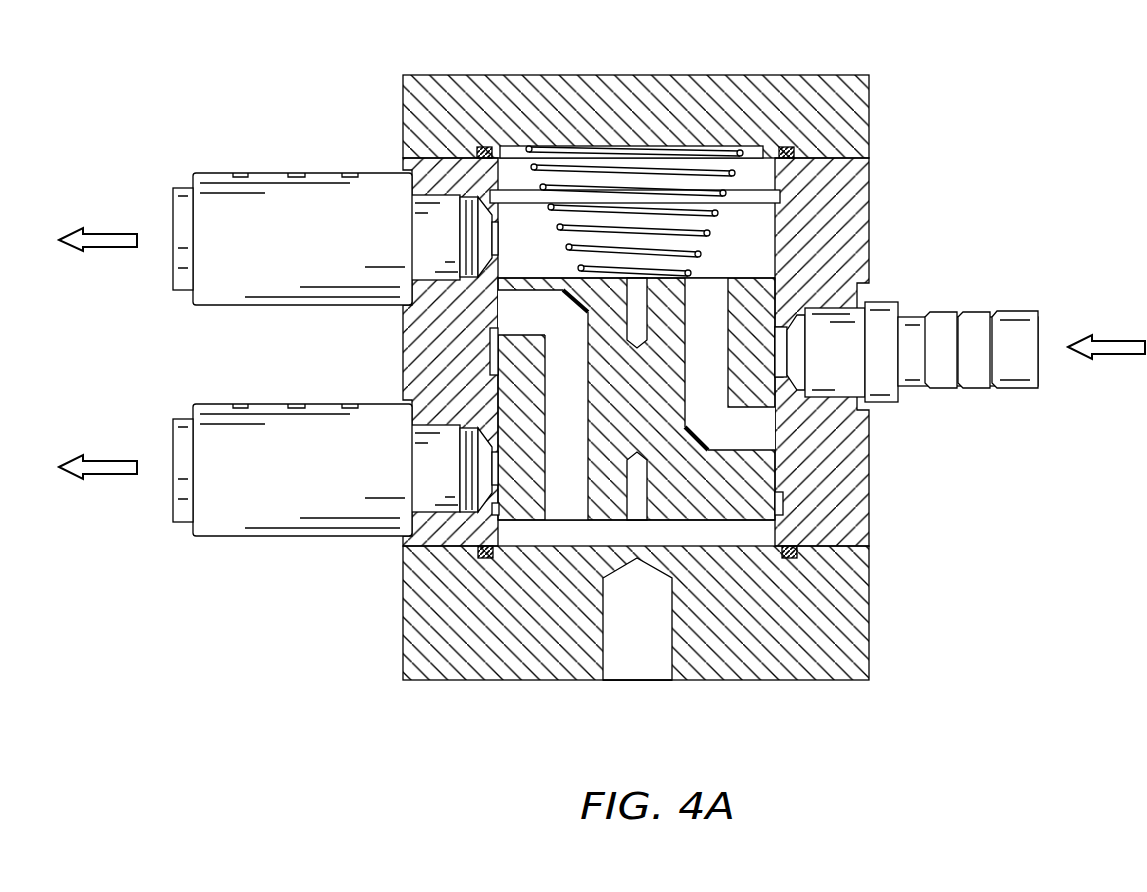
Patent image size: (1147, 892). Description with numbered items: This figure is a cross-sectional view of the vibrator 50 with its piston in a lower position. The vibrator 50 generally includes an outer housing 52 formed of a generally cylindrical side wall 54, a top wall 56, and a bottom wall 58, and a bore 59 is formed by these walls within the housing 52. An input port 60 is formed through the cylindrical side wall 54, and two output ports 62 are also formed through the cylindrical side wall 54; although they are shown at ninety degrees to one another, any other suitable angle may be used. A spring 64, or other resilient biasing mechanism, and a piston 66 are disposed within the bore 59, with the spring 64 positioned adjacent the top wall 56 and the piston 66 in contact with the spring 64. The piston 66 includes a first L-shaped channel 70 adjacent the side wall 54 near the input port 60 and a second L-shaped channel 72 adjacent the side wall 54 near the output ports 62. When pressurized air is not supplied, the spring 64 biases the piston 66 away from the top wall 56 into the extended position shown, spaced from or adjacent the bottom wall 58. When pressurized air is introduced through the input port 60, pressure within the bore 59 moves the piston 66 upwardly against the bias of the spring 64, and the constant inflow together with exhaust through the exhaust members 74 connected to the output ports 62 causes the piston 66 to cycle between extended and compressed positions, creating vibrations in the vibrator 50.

The vibrator 50 is at (968, 243).
The outer housing 52 is at (666, 352).
The cylindrical side wall 54 is at (853, 177).
The top wall 56 is at (587, 92).
The bottom wall 58 is at (802, 668).
The bore 59 is at (541, 535).
The input port 60 is at (910, 325).
The output ports 62 is at (420, 242).
The spring 64 is at (680, 152).
The piston 66 is at (632, 513).
The first L-shaped channel 70 is at (770, 437).
The second L-shaped channel 72 is at (530, 311).
The exhaust members 74 is at (225, 292).